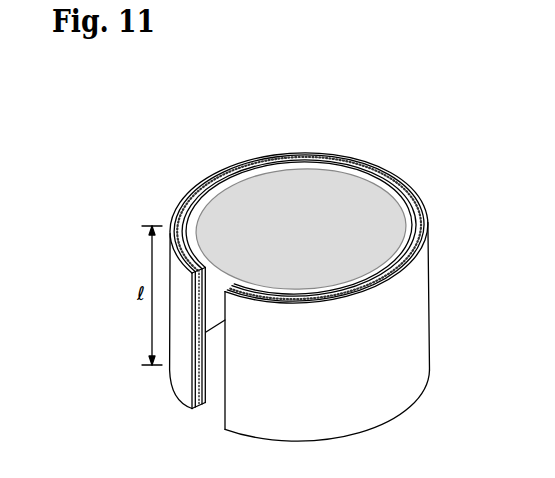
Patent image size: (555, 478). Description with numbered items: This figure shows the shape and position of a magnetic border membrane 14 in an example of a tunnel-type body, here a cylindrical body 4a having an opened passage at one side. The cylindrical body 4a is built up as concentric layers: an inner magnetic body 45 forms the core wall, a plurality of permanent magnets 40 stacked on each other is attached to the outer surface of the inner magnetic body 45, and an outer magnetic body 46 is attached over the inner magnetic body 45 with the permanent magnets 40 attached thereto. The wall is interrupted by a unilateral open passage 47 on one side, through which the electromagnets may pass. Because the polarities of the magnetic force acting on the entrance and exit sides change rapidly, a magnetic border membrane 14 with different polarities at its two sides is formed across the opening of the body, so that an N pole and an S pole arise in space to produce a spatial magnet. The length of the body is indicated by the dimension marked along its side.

The cylindrical body 4a is at (339, 107).
The magnetic border membrane 14 is at (337, 189).
The permanent magnets 40 is at (420, 210).
The inner magnetic body 45 is at (402, 193).
The outer magnetic body 46 is at (391, 175).
The unilateral open passage 47 is at (217, 378).